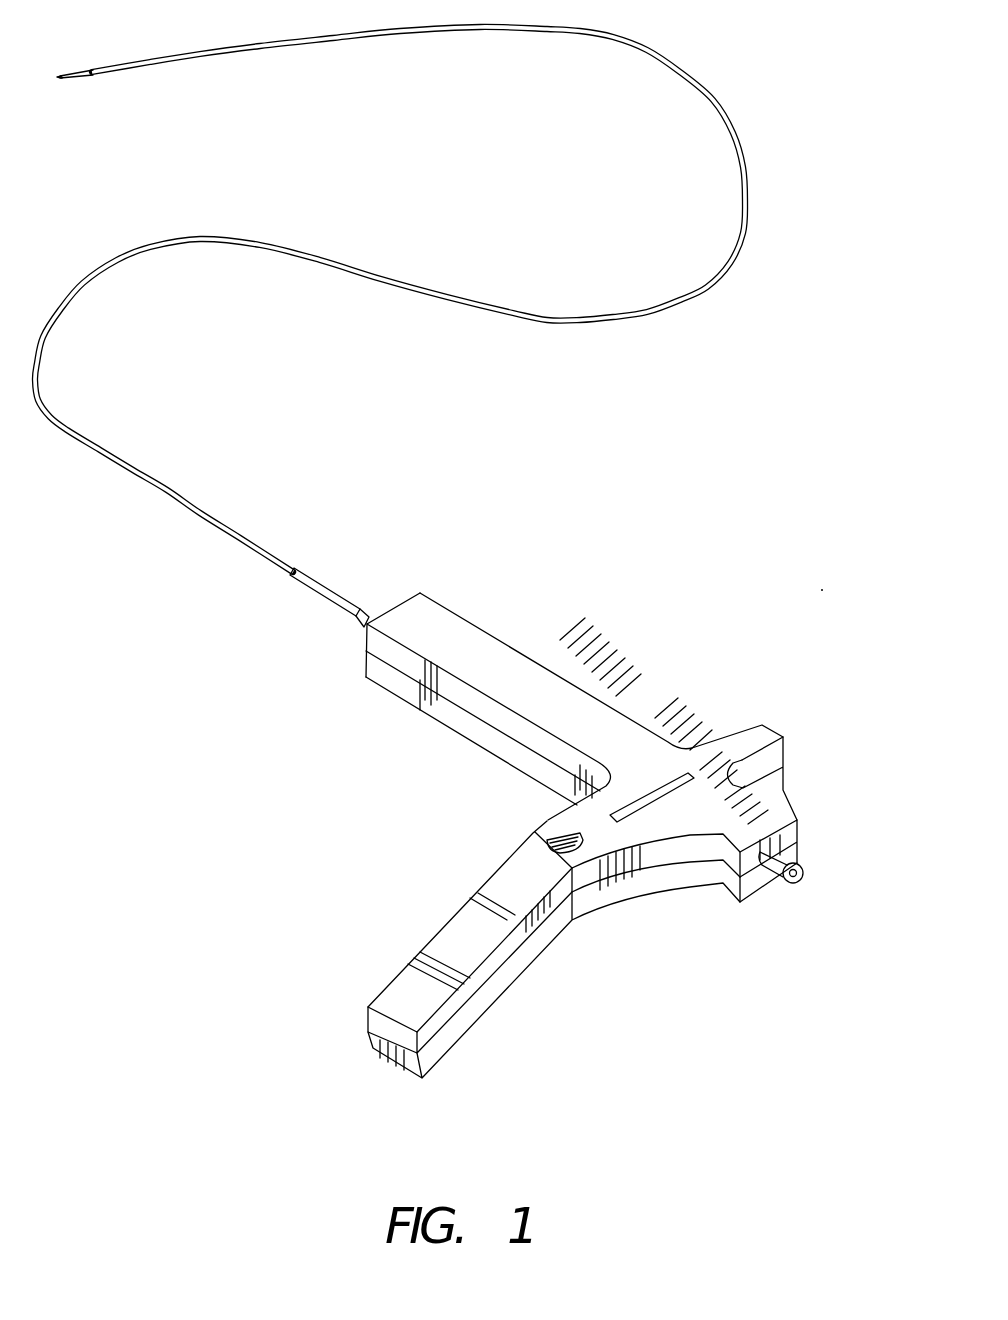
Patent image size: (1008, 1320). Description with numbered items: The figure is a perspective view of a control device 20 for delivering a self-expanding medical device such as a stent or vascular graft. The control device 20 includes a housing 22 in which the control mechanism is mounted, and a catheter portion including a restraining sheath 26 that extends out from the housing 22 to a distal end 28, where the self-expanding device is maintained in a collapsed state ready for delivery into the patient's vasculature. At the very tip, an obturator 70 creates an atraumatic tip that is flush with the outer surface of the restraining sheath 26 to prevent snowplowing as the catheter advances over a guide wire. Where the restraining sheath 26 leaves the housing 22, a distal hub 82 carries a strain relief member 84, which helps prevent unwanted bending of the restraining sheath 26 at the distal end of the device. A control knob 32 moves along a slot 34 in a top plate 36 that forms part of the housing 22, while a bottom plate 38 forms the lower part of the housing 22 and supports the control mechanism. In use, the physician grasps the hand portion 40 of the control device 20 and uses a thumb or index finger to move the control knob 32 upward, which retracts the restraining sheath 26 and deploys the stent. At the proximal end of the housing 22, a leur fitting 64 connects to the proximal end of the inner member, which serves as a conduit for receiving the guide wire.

The control device 20 is at (651, 657).
The housing 22 is at (525, 680).
The restraining sheath 26 is at (750, 197).
The distal end 28 is at (137, 62).
The control knob 32 is at (565, 833).
The slot 34 is at (603, 820).
The top plate 36 is at (490, 968).
The bottom plate 38 is at (453, 1033).
The hand portion 40 is at (366, 937).
The leur fitting 64 is at (782, 853).
The obturator 70 is at (80, 78).
The distal hub 82 is at (370, 613).
The strain relief member 84 is at (320, 583).